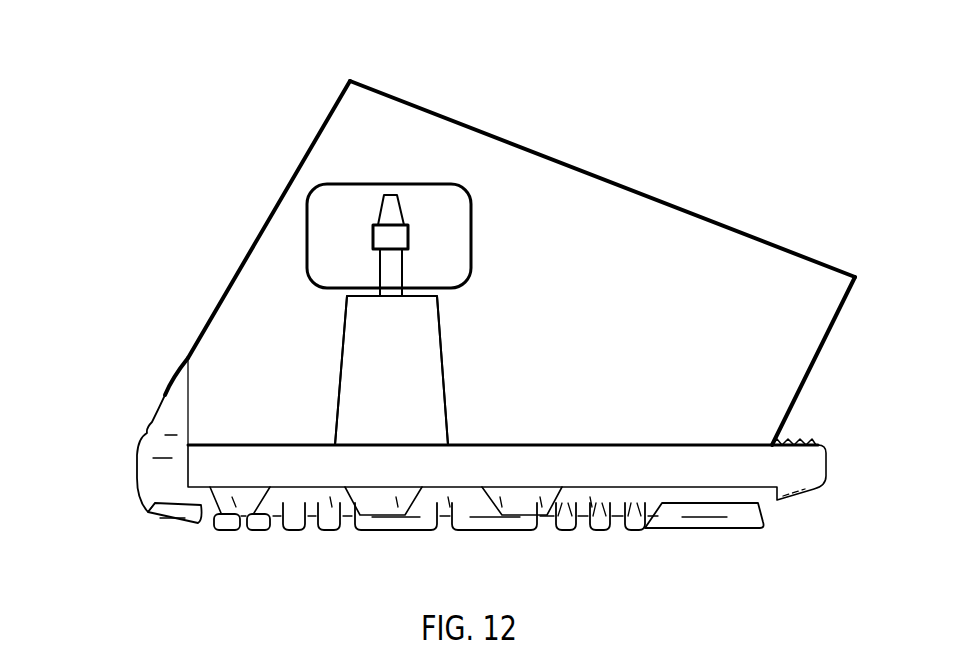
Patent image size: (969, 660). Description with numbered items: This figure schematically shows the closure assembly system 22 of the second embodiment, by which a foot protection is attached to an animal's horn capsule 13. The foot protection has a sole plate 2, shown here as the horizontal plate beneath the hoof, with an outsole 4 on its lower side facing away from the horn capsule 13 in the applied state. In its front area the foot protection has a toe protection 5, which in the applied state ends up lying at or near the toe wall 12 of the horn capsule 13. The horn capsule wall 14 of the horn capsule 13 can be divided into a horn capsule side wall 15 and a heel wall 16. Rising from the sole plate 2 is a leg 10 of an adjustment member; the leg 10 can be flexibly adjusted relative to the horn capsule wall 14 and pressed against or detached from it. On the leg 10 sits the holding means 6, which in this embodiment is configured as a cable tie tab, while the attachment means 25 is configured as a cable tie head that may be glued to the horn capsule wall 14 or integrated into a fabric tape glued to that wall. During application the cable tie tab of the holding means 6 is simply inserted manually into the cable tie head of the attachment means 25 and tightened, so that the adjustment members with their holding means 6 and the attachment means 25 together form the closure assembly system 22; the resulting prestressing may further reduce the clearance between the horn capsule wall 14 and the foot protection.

The closure assembly system 22 is at (134, 73).
The sole plate 2 is at (630, 467).
The outsole 4 is at (720, 515).
The toe protection 5 is at (175, 397).
The holding means 6 is at (392, 278).
The leg 10 is at (398, 352).
The toe wall 12 is at (196, 326).
The horn capsule 13 is at (527, 200).
The horn capsule wall 14 is at (654, 251).
The horn capsule side wall 15 is at (320, 313).
The heel wall 16 is at (699, 427).
The attachment means 25 is at (390, 241).